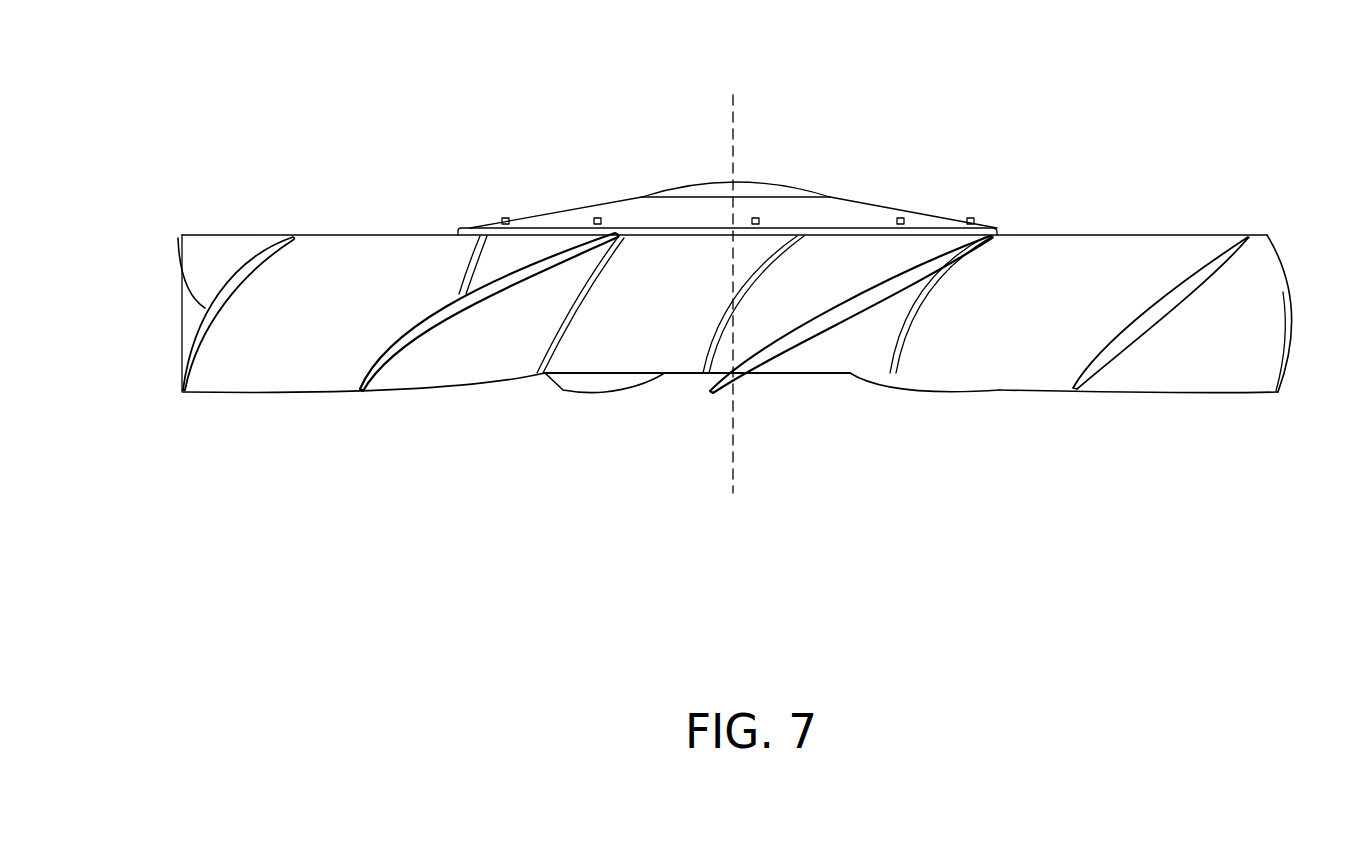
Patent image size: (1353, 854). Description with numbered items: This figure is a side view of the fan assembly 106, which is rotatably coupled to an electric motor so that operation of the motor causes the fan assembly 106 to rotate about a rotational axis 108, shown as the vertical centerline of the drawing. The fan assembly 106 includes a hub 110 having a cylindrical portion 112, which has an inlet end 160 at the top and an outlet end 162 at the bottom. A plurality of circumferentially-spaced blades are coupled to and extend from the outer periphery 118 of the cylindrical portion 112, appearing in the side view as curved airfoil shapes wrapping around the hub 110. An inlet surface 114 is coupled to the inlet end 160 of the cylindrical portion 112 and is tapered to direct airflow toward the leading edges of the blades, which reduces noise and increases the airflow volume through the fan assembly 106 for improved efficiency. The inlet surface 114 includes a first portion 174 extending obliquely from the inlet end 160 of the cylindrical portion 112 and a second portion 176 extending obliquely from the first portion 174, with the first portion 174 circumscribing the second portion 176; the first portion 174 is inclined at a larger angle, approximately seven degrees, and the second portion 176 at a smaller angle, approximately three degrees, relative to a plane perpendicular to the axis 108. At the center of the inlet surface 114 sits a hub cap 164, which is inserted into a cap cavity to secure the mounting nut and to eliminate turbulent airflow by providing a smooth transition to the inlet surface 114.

The fan assembly 106 is at (233, 140).
The rotational axis 108 is at (731, 122).
The hub 110 is at (658, 404).
The cylindrical portion 112 is at (617, 353).
The inlet surface 114 is at (928, 222).
The outer periphery 118 is at (778, 363).
The inlet end 160 is at (465, 183).
The outlet end 162 is at (468, 438).
The hub cap 164 is at (713, 184).
The first portion 174 is at (833, 210).
The second portion 176 is at (787, 193).